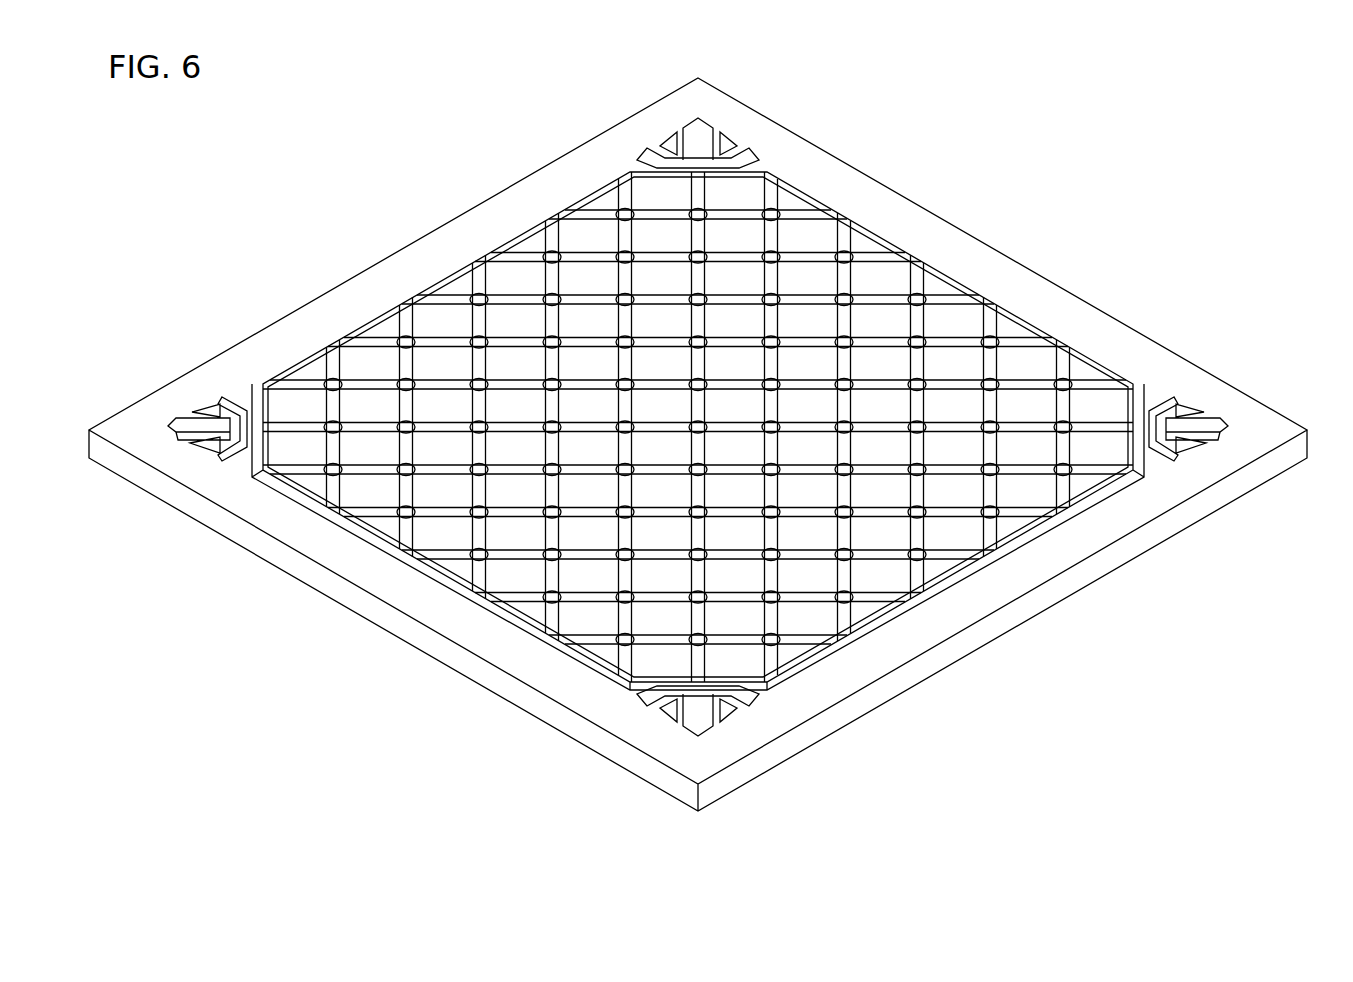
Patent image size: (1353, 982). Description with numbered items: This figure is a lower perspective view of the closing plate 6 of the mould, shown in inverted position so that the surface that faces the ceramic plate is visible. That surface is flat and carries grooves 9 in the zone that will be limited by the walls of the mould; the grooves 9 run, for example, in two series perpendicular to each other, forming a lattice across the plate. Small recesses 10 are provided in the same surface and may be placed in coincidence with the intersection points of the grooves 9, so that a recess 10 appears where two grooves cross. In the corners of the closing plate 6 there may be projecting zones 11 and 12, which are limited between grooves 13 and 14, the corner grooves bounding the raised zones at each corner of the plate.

The closing plate 6 is at (947, 232).
The grooves 9 is at (1067, 368).
The small recesses 10 is at (775, 262).
The projecting zone 11 is at (700, 719).
The projecting zone 12 is at (727, 713).
The groove 13 is at (662, 712).
The groove 14 is at (227, 403).